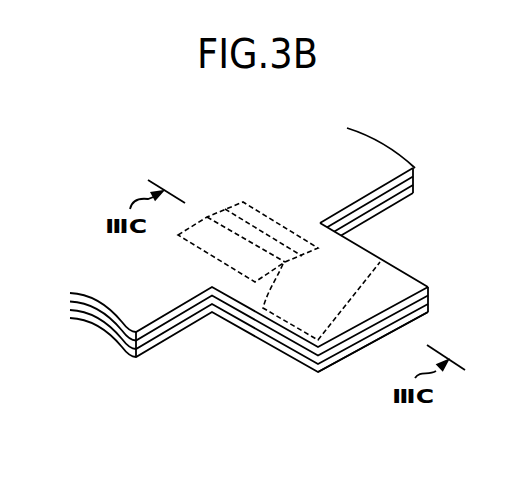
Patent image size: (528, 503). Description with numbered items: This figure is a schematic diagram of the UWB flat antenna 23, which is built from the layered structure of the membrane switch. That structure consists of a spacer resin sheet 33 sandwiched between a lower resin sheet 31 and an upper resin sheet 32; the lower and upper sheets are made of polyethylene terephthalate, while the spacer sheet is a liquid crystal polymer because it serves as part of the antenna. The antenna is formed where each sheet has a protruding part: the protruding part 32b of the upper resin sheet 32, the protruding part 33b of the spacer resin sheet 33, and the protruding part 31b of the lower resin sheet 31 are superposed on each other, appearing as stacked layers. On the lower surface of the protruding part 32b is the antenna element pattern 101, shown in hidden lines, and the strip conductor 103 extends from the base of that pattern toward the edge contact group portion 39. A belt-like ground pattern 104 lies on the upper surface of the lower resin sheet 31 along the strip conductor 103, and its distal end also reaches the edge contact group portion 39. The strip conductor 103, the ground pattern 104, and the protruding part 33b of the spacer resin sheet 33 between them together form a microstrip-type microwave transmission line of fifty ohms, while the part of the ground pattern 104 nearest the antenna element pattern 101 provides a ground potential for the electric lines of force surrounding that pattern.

The UWB flat antenna 23 is at (165, 108).
The upper resin sheet 32 is at (372, 157).
The spacer resin sheet 33 is at (413, 185).
The lower resin sheet 31 is at (385, 207).
The protruding part of the upper resin sheet 32b is at (432, 283).
The protruding part of the spacer resin sheet 33b is at (430, 298).
The protruding part of the lower resin sheet 31b is at (431, 312).
The antenna element pattern 101 is at (318, 249).
The strip conductor 103 is at (249, 228).
The ground pattern 104 is at (222, 287).
The edge contact group portion 39 is at (284, 371).